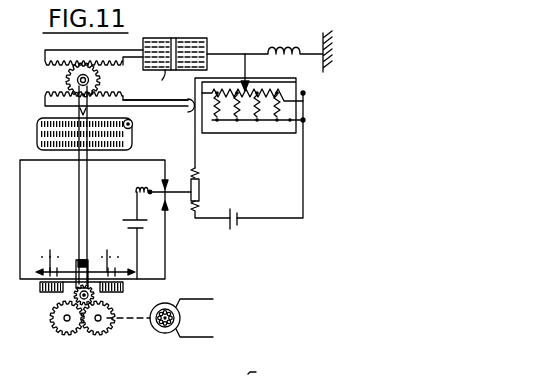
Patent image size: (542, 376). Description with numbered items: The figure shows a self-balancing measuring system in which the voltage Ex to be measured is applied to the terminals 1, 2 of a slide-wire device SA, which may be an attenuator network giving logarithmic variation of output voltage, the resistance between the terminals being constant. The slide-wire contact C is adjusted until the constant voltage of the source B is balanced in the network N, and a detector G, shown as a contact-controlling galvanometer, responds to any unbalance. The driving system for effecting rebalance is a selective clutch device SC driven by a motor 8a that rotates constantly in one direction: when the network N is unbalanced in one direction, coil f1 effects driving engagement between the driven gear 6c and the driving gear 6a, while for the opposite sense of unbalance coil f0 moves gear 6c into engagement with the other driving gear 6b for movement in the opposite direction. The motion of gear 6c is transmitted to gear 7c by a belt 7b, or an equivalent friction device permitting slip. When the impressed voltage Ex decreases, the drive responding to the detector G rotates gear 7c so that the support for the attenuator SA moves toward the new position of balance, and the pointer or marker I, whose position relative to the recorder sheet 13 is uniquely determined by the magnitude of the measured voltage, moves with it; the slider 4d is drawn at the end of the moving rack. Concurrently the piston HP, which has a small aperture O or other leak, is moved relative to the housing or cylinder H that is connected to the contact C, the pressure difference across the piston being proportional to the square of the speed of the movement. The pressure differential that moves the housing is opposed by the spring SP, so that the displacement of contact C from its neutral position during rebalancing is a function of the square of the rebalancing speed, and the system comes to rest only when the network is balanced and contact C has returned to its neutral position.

The terminal 1 is at (304, 121).
The terminal 2 is at (304, 94).
The recorder sheet 13 is at (38, 133).
The contact slider 4d is at (155, 120).
The driving gear 6a is at (98, 336).
The driving gear 6b is at (51, 336).
The driven gear 6c is at (94, 292).
The belt 7b is at (88, 203).
The gear 7c is at (102, 81).
The driving motor 8a is at (161, 335).
The constant voltage source B is at (233, 231).
The slide-wire contact C is at (250, 78).
The voltage to be measured Ex is at (314, 107).
The detector G is at (200, 190).
The housing or cylinder H is at (166, 38).
The piston HP is at (182, 40).
The pointer or marker I is at (82, 110).
The network N is at (276, 197).
The small aperture O is at (159, 82).
The slide-wire device SA is at (246, 108).
The selective clutch device SC is at (73, 291).
The spring SP is at (273, 48).
The coil f0 is at (46, 252).
The coil f1 is at (106, 252).